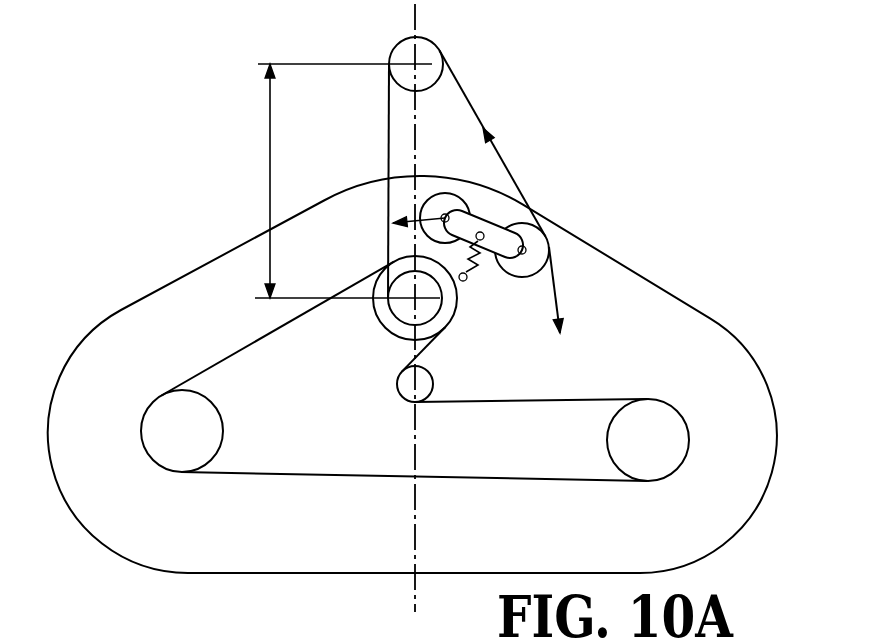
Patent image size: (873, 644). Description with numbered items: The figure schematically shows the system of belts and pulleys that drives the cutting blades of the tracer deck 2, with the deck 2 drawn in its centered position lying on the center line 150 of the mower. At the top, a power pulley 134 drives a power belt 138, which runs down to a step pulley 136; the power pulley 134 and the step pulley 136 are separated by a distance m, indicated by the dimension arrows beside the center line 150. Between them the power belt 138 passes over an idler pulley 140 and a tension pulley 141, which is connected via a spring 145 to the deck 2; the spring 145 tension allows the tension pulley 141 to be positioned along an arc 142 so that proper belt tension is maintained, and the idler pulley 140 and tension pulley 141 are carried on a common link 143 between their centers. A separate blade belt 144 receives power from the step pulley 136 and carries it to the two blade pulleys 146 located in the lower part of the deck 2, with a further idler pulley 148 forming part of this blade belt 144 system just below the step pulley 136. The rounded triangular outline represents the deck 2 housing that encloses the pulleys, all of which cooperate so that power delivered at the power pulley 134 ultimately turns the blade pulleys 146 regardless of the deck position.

The tracer deck 2 is at (176, 224).
The power pulley 134 is at (444, 54).
The step pulley 136 is at (386, 328).
The power belt 138 is at (480, 106).
The idler pulley 140 is at (447, 193).
The tension pulley 141 is at (551, 250).
The arc 142 is at (558, 303).
The tensioner link arm 143 is at (497, 221).
The blade belt 144 is at (363, 478).
The spring 145 is at (478, 262).
The blade pulleys 146 is at (208, 449).
The idler pulley 148 is at (403, 401).
The center line 150 is at (415, 21).
The distance m is at (270, 163).